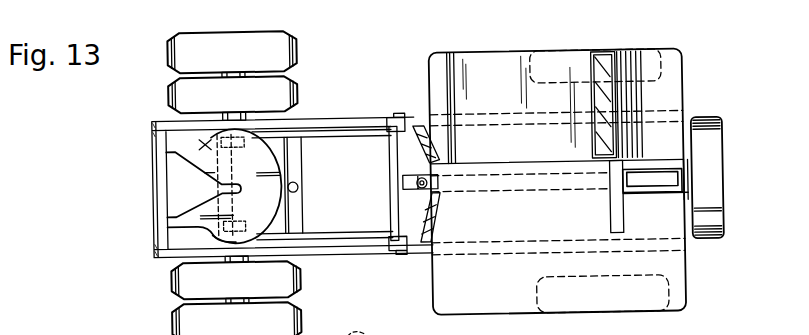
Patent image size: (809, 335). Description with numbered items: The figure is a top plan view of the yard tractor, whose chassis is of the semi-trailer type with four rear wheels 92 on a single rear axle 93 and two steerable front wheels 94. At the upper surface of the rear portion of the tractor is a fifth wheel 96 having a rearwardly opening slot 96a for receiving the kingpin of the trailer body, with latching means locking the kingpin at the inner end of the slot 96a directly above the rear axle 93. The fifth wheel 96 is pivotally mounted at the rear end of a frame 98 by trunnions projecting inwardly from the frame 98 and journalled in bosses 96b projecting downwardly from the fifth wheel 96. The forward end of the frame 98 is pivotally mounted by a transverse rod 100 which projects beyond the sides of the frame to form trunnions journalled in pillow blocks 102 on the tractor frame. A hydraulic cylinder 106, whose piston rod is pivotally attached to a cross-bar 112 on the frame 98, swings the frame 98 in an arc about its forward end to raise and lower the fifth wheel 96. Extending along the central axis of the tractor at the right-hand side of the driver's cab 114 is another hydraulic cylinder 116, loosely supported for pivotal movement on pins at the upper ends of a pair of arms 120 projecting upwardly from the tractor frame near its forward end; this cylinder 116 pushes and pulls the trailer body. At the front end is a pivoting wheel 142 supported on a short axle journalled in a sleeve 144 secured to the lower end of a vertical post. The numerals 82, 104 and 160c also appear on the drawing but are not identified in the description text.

The vehicle 82 is at (29, 332).
The rear wheels 92 is at (294, 31).
The rear axle 93 is at (166, 116).
The steerable front wheels 94 is at (657, 56).
The fifth wheel 96 is at (210, 170).
The rearwardly opening slot 96a is at (246, 185).
The bosses 96b is at (205, 144).
The frame 98 is at (326, 128).
The transverse rod 100 is at (393, 169).
The pillow blocks 102 is at (393, 119).
The lower opening 104 is at (240, 229).
The hydraulic cylinder 106 is at (299, 185).
The cross-bar 112 is at (296, 163).
The driver's cab 114 is at (508, 54).
The hydraulic cylinder 116 is at (647, 180).
The arms 120 is at (677, 174).
The pivoting wheel 142 is at (723, 157).
The sleeve 144 is at (692, 122).
The attachment 160c is at (405, 334).